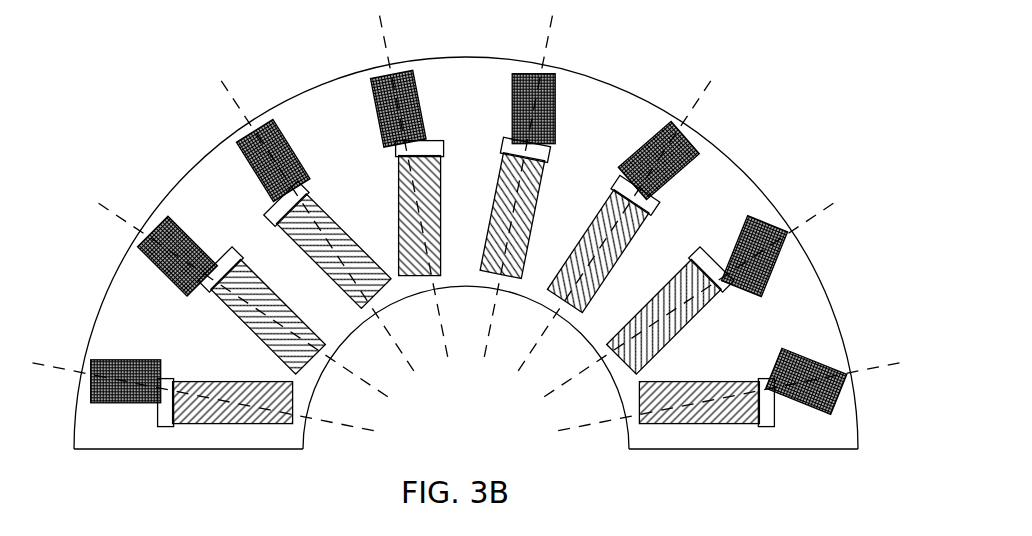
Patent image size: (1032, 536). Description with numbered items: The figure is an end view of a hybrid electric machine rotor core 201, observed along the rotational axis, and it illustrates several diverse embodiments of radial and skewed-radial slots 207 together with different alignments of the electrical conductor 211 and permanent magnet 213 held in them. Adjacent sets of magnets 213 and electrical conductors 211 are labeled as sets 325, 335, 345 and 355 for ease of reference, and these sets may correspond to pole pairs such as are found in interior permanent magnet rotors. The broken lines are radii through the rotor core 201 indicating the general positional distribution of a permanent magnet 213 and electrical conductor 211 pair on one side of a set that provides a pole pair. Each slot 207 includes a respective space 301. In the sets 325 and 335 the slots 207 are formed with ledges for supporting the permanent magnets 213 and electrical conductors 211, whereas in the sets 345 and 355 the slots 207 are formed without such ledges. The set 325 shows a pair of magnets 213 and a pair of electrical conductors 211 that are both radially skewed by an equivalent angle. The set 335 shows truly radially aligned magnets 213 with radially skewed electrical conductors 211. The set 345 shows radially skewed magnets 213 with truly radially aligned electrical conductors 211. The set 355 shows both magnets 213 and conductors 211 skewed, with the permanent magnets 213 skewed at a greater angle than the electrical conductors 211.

The rotor core 201 is at (212, 178).
The slot 207 is at (403, 277).
The electrical conductor 211 is at (353, 243).
The permanent magnet 213 is at (375, 112).
The space 301 is at (276, 218).
The set 325 is at (67, 245).
The set 335 is at (265, 37).
The set 345 is at (655, 47).
The set 355 is at (886, 264).